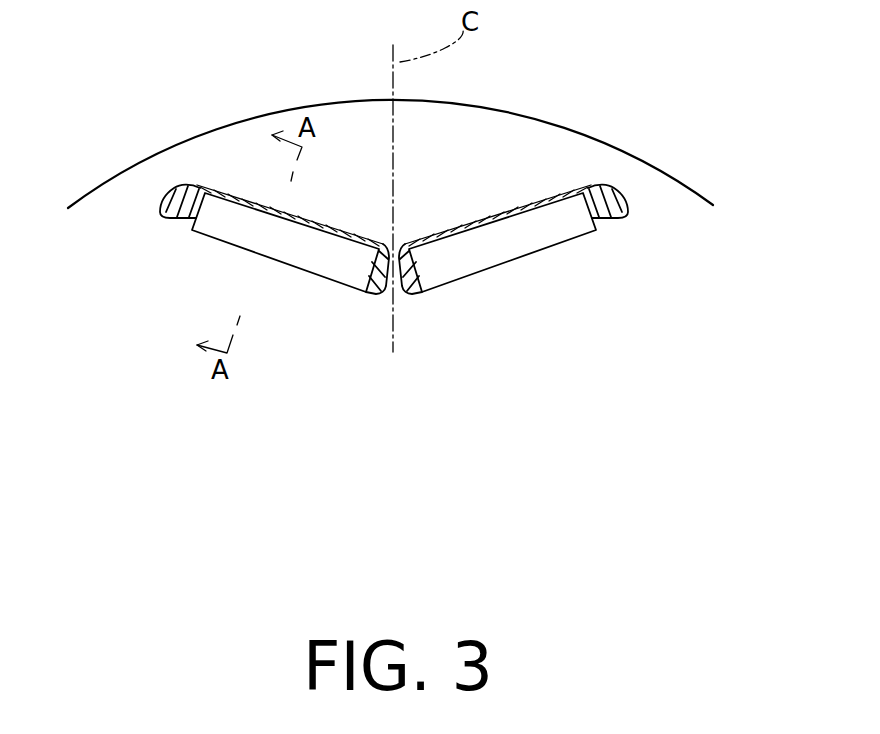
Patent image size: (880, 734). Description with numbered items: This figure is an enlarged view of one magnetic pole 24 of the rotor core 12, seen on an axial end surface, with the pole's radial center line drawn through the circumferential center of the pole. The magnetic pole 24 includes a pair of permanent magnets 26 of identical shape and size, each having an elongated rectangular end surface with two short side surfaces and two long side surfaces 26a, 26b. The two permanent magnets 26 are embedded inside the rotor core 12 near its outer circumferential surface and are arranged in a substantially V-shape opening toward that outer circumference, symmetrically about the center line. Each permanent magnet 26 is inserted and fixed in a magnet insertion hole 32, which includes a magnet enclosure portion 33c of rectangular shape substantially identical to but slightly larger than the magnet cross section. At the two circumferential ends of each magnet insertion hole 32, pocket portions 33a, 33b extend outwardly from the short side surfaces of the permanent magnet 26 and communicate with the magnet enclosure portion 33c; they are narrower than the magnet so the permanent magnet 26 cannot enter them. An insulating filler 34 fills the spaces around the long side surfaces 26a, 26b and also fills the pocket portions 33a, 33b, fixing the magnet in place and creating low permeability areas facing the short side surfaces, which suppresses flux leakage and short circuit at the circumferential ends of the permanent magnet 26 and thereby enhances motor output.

The rotor core 12 is at (697, 188).
The magnetic pole 24 is at (525, 143).
The permanent magnet 26 is at (183, 188).
The long side surface 26a is at (213, 192).
The long side surface 26b is at (195, 228).
The magnet insertion hole 32 is at (330, 281).
The pocket portion 33a is at (165, 217).
The pocket portion 33b is at (378, 296).
The magnet enclosure portion 33c is at (245, 236).
The insulating filler 34 is at (318, 224).